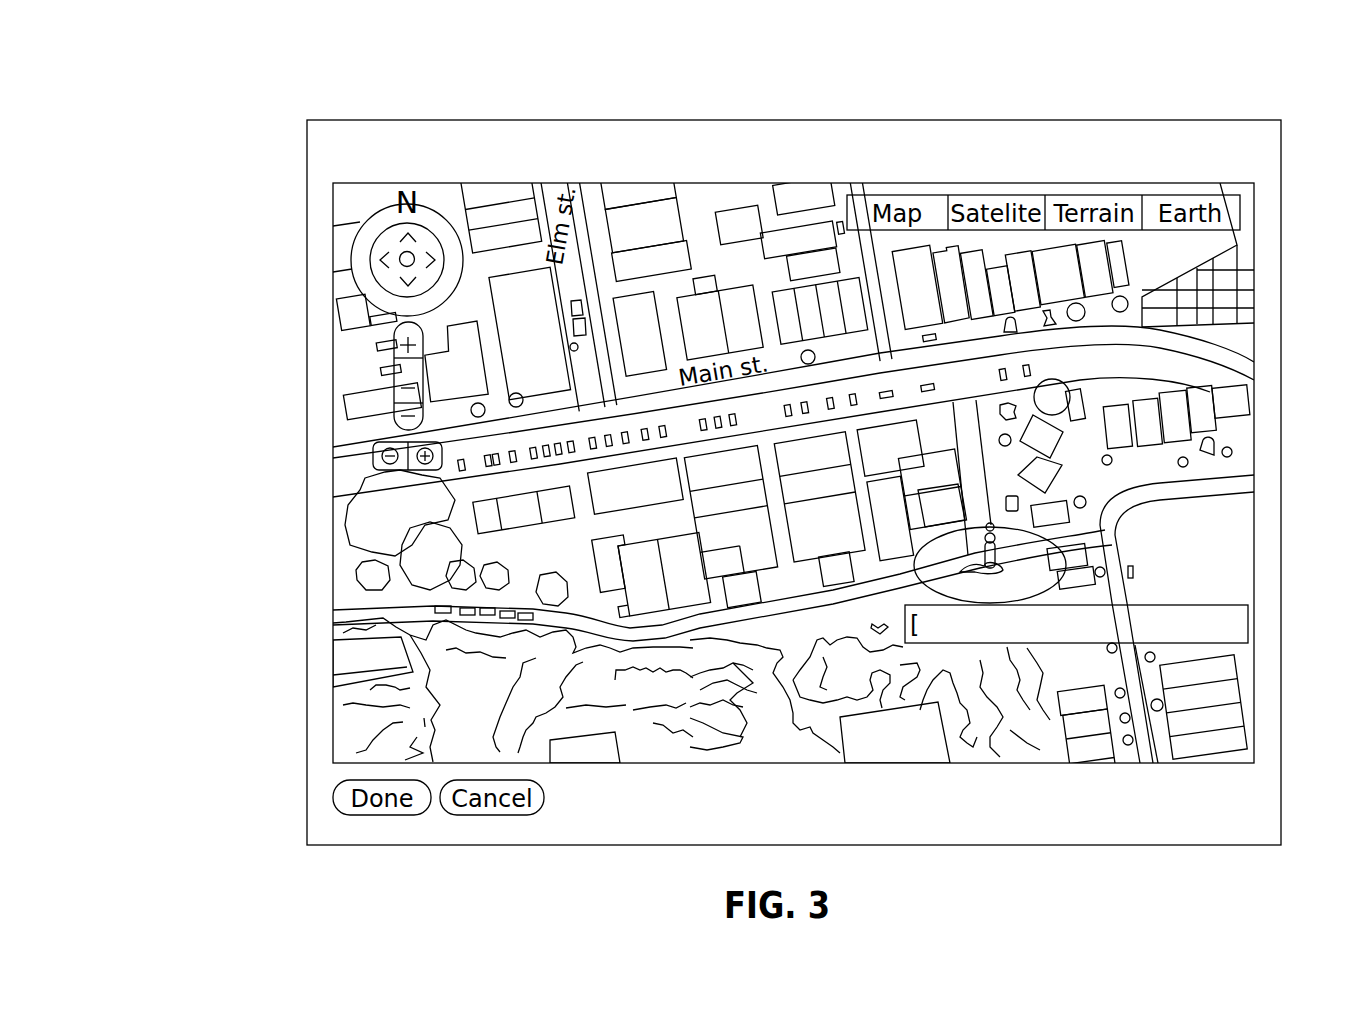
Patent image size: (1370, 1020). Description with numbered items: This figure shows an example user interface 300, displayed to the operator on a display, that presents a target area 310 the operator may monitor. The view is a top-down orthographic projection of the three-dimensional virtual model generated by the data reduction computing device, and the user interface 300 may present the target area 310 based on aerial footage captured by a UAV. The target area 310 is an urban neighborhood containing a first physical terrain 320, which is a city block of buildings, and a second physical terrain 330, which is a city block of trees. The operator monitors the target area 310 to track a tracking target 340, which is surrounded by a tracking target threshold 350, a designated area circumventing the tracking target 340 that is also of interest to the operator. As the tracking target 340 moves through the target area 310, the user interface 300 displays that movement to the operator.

The user interface 300 is at (212, 147).
The target area 310 is at (1254, 478).
The first physical terrain 320 is at (955, 500).
The second physical terrain 330 is at (655, 722).
The tracking target 340 is at (958, 528).
The tracking target threshold 350 is at (1067, 552).